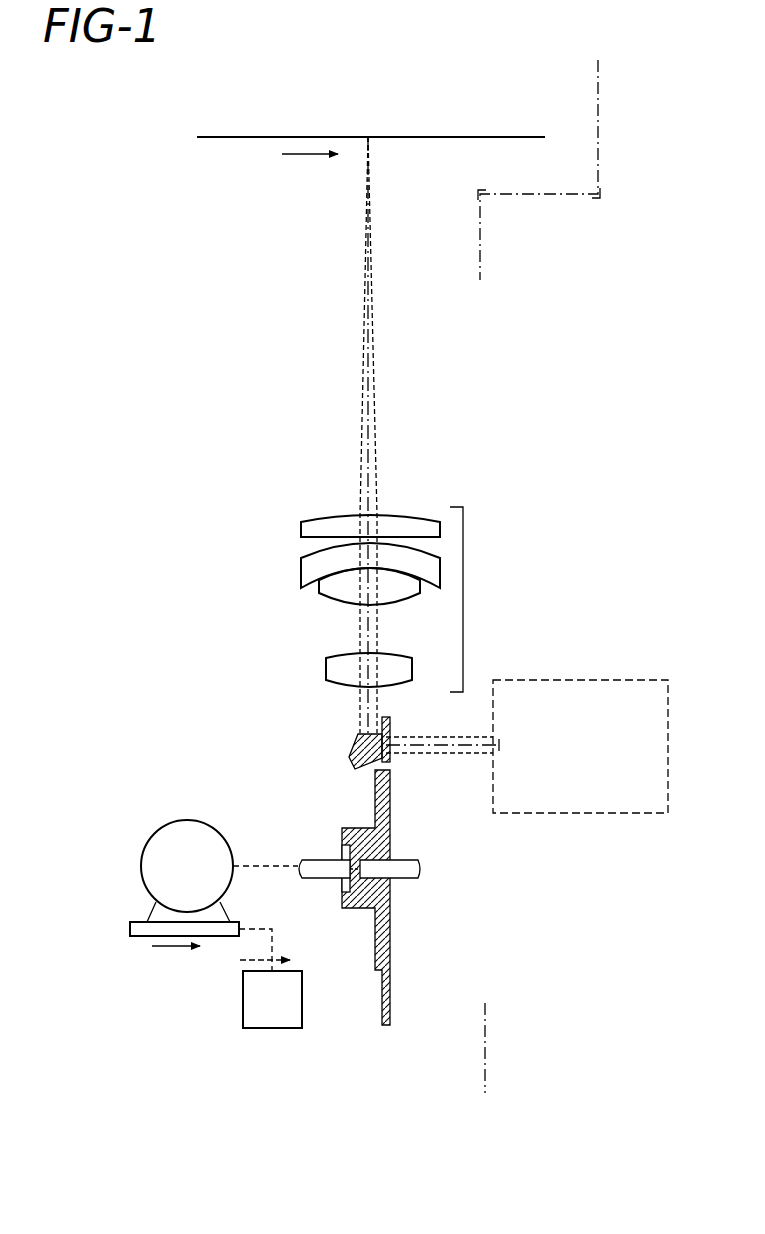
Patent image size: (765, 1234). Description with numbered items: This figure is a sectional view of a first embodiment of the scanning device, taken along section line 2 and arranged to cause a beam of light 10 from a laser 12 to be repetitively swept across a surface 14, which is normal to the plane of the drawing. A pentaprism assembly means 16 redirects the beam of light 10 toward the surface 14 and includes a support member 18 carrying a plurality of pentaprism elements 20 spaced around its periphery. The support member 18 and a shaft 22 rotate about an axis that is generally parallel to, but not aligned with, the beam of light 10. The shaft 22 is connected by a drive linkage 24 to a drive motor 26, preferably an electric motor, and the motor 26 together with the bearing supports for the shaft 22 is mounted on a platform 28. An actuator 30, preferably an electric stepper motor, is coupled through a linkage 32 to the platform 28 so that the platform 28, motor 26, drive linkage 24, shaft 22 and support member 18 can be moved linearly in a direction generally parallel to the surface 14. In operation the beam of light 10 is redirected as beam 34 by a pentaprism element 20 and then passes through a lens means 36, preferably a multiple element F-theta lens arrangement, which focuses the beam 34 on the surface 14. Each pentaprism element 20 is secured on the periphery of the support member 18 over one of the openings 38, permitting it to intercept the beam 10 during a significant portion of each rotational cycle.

The section line 2- 2 is at (560, 73).
The beam of light 10 is at (452, 737).
The laser 12 is at (589, 680).
The surface 14 is at (468, 137).
The pentaprism assembly means 16 is at (296, 704).
The support member 18 is at (390, 824).
The pentaprism element 20 is at (350, 760).
The shaft 22 is at (405, 878).
The drive linkage 24 is at (282, 866).
The drive motor 26 is at (152, 838).
The platform 28 is at (130, 927).
The actuator 30 is at (243, 993).
The linkage 32 is at (272, 925).
The beam 34 is at (358, 697).
The lens means 36 is at (465, 552).
The opening 38 is at (387, 740).